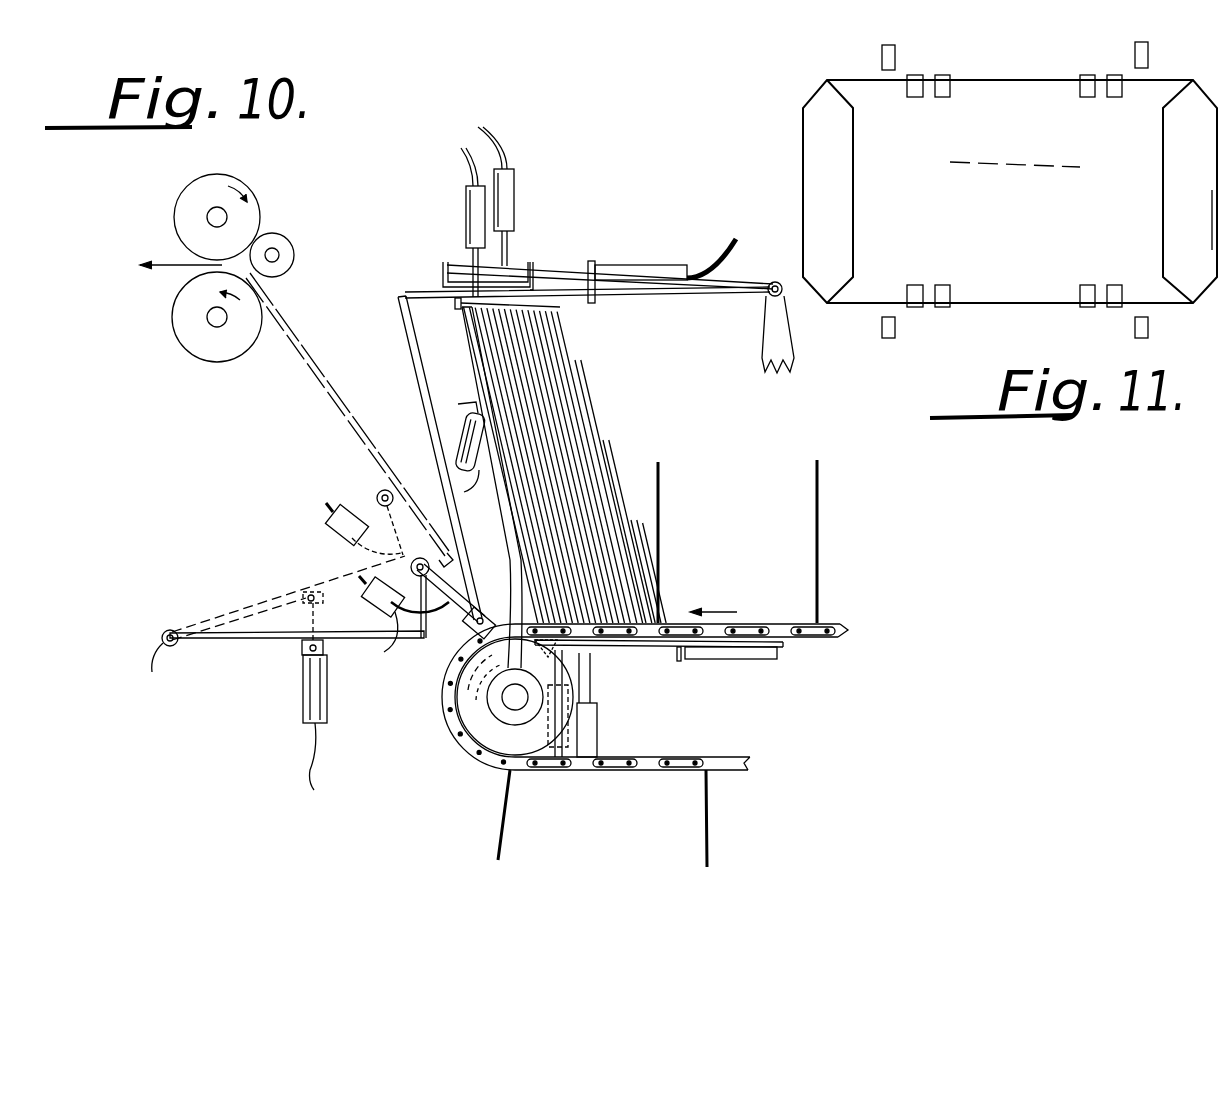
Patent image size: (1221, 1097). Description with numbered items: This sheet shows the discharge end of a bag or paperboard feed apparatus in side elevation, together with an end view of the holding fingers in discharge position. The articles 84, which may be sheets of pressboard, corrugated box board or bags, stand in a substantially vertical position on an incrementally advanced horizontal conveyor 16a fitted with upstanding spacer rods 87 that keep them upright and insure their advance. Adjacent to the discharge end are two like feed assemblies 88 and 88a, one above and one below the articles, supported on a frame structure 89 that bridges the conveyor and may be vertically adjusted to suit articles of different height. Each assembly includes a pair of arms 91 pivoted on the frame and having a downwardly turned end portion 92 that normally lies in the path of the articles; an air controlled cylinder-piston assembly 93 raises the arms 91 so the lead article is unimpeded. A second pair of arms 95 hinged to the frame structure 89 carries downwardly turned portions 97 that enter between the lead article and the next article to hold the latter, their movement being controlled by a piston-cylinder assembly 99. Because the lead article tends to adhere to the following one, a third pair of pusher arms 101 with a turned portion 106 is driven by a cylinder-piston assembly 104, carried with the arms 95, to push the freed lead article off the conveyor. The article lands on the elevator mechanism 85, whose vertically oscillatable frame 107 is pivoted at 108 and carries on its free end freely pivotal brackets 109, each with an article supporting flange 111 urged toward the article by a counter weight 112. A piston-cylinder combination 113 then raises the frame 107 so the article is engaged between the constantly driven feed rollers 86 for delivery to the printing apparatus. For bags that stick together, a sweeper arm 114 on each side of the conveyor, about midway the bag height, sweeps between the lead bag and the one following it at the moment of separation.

In FIG. 10, the horizontal conveyor 16a is at (842, 632).
In FIG. 10, the articles 84 is at (279, 322).
In FIG. 11, the articles 84 is at (814, 142).
In FIG. 10, the elevator mechanism 85 is at (309, 562).
In FIG. 10, the feed rollers 86 is at (278, 214).
In FIG. 10, the spacer rods 87 is at (661, 570).
In FIG. 10, the feed assembly 88 is at (608, 256).
In FIG. 10, the feed assembly 88a is at (730, 654).
In FIG. 10, the frame structure 89 is at (796, 352).
In FIG. 11, the arms 91 is at (1147, 46).
In FIG. 10, the downwardly turned end portion 92 is at (446, 264).
In FIG. 10, the air controlled cylinder-piston assembly 93 is at (513, 191).
In FIG. 10, the arms 95 is at (674, 298).
In FIG. 11, the arms 95 is at (913, 74).
In FIG. 10, the downwardly turned portions 97 is at (461, 320).
In FIG. 10, the piston-cylinder assembly 99 is at (468, 196).
In FIG. 10, the arms 101 is at (443, 270).
In FIG. 11, the arms 101 is at (950, 76).
In FIG. 10, the cylinder-piston assembly 104 is at (668, 266).
In FIG. 10, the turned portion 106 is at (400, 330).
In FIG. 10, the vertically oscillatable frame 107 is at (240, 652).
In FIG. 10, the pivot 108 is at (145, 671).
In FIG. 10, the brackets 109 is at (445, 640).
In FIG. 10, the article supporting flange 111 is at (457, 632).
In FIG. 10, the counter weight 112 is at (392, 648).
In FIG. 10, the piston-cylinder combination 113 is at (303, 708).
In FIG. 10, the sweeper arm 114 is at (458, 428).